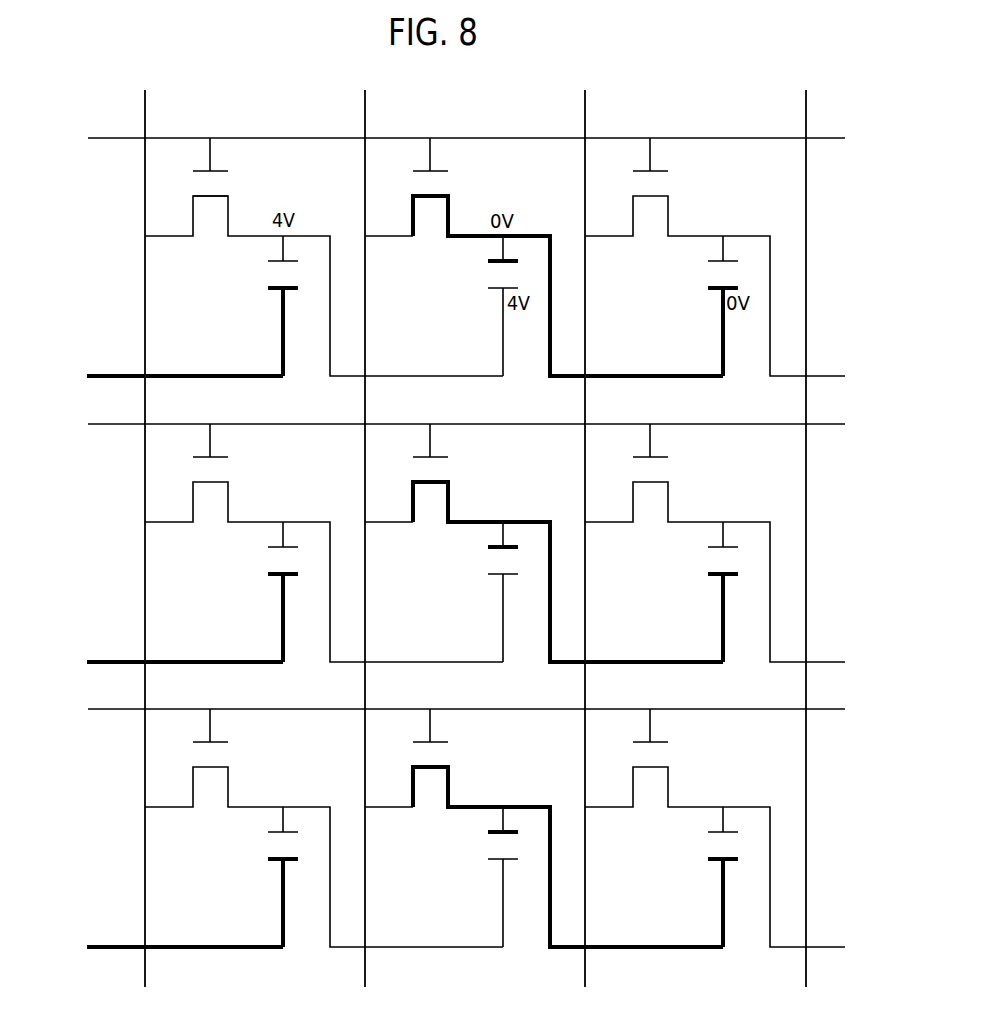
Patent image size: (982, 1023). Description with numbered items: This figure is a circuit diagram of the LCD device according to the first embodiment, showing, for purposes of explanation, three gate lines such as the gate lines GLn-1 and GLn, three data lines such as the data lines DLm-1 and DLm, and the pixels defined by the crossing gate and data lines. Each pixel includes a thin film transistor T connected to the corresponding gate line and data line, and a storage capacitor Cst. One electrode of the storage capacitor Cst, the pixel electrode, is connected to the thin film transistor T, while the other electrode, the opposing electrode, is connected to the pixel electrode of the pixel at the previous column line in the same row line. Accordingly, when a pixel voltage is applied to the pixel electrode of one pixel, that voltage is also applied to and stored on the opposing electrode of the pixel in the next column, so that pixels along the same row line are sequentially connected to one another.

The data line DLm-1 is at (149, 523).
The data line DLm is at (371, 523).
The gate line GLn-1 is at (434, 137).
The gate line GLn is at (446, 421).
The thin film transistor T is at (210, 225).
The storage capacitor Cst is at (270, 306).